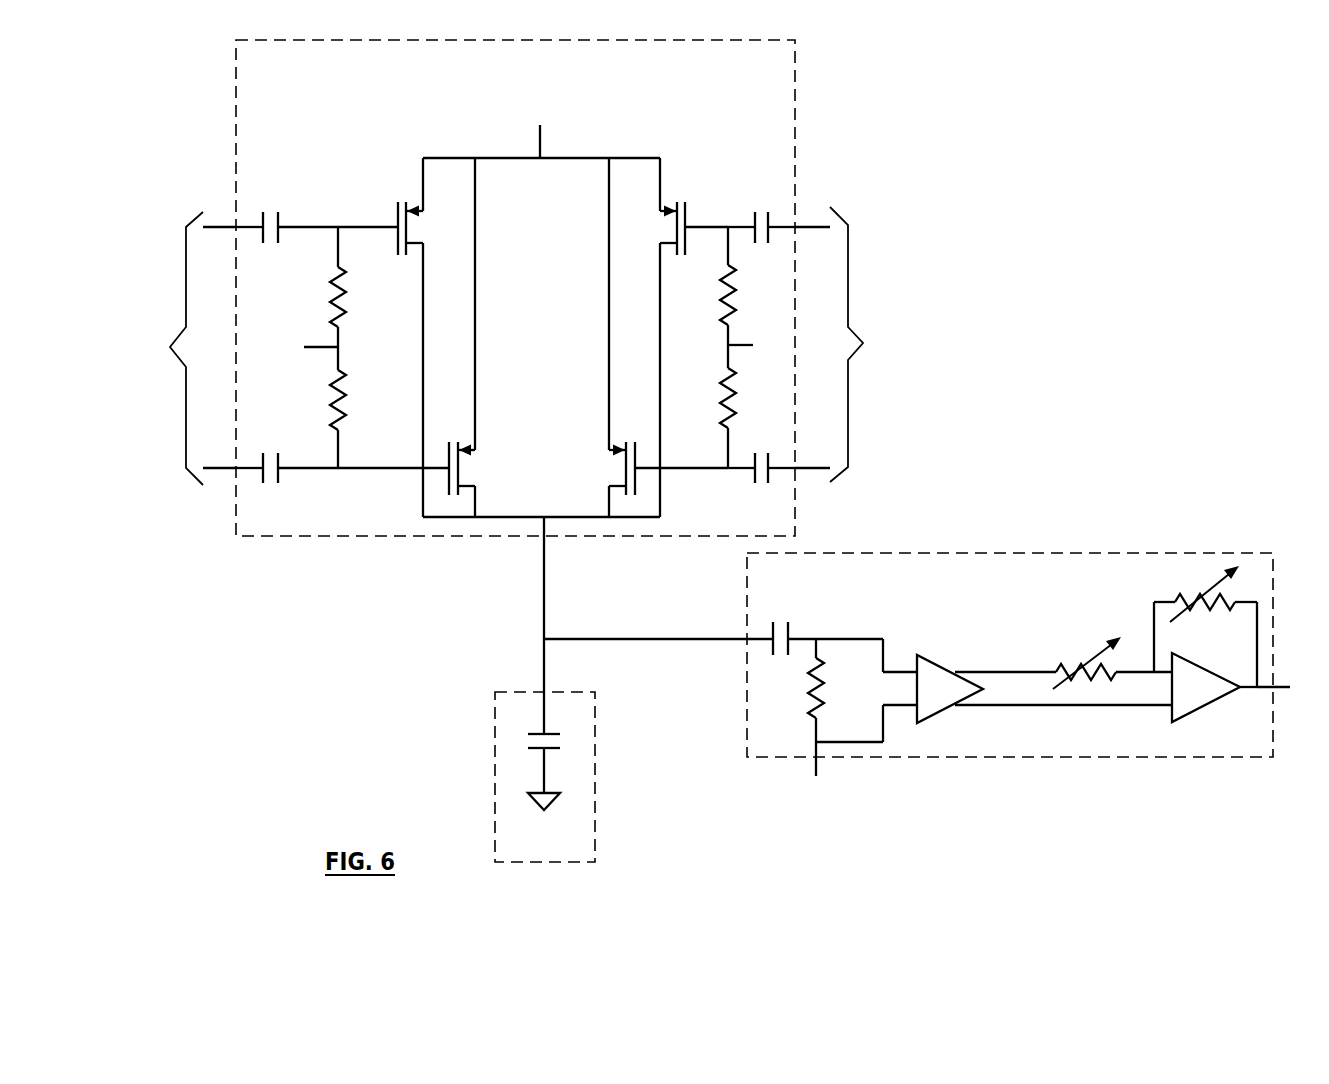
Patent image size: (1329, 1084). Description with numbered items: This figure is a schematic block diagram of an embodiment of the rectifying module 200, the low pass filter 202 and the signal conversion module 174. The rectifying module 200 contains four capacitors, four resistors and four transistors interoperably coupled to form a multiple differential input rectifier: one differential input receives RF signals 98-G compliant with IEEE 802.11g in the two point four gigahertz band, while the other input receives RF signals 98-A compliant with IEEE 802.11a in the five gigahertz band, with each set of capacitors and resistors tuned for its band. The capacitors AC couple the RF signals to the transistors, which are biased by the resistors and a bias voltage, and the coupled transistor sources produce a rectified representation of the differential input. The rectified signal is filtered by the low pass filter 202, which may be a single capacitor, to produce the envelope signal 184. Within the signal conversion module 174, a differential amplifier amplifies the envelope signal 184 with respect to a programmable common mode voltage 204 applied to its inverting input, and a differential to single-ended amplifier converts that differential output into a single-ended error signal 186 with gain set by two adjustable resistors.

The rectifying module 200 is at (622, 71).
The RF signals 98-G is at (173, 348).
The RF signals 98-A is at (859, 344).
The envelope signal 184 is at (577, 639).
The low pass filter 202 is at (587, 852).
The signal conversion module 174 is at (1010, 655).
The programmable common mode voltage 204 is at (814, 794).
The error signal 186 is at (1287, 687).